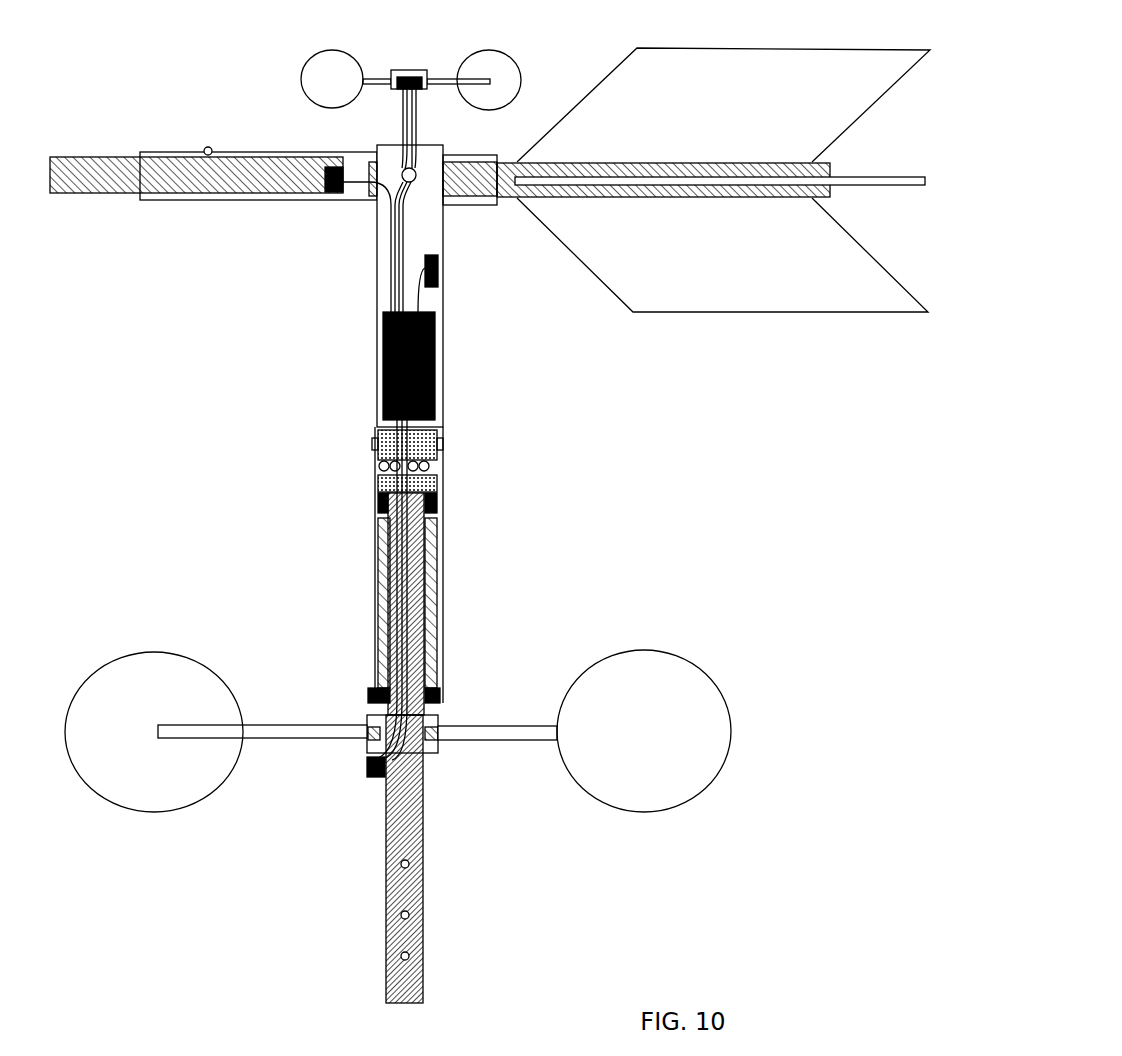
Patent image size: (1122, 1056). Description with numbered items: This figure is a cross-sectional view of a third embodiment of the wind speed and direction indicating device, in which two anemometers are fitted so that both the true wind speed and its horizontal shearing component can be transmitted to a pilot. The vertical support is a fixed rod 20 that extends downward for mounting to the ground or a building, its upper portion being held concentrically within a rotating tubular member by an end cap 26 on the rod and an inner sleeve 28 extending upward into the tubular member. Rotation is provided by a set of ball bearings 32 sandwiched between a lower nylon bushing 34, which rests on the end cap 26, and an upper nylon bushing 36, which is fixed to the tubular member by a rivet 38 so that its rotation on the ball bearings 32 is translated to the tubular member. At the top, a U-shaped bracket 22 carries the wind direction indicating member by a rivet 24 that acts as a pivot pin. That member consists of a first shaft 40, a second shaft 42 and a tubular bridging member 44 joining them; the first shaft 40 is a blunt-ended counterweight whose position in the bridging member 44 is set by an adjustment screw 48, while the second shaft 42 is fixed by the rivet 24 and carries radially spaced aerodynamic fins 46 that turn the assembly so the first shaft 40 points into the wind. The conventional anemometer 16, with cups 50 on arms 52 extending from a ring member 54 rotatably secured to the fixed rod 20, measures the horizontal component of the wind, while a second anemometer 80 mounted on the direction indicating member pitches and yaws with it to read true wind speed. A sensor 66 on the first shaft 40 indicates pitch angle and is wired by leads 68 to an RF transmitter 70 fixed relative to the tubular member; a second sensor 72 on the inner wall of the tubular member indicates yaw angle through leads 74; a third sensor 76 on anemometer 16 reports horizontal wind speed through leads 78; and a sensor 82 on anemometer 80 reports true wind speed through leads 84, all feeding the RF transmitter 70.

The anemometer 16 is at (450, 762).
The fixed rod 20 is at (405, 826).
The U-shaped bracket 22 is at (413, 195).
The rivet 24 is at (422, 166).
The end cap 26 is at (440, 503).
The inner sleeve 28 is at (430, 578).
The ball bearings 32 is at (380, 467).
The nylon bushing 34 is at (383, 488).
The nylon bushing 36 is at (445, 425).
The rivet 38 is at (445, 445).
The first shaft 40 is at (90, 186).
The second shaft 42 is at (830, 192).
The bridging member 44 is at (357, 153).
The fins 46 is at (645, 97).
The adjustment screw 48 is at (208, 148).
The cups 50 is at (170, 792).
The arms 52 is at (268, 730).
The ring member 54 is at (365, 752).
The sensor 66 is at (338, 193).
The leads 68 is at (390, 213).
The RF transmitter 70 is at (437, 365).
The second sensor 72 is at (440, 272).
The leads 74 is at (420, 298).
The third sensor 76 is at (375, 778).
The leads 78 is at (410, 615).
The anemometer 80 is at (411, 62).
The sensor 82 is at (424, 90).
The leads 84 is at (404, 118).